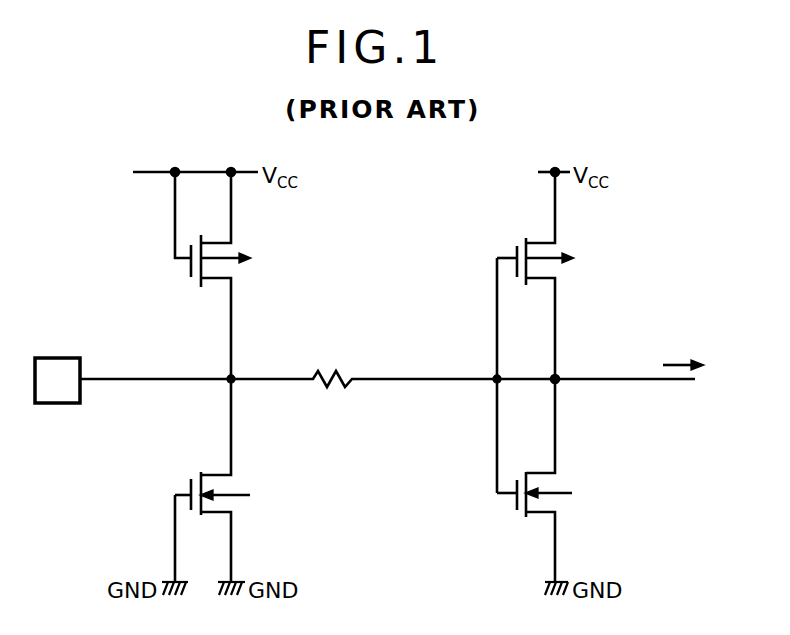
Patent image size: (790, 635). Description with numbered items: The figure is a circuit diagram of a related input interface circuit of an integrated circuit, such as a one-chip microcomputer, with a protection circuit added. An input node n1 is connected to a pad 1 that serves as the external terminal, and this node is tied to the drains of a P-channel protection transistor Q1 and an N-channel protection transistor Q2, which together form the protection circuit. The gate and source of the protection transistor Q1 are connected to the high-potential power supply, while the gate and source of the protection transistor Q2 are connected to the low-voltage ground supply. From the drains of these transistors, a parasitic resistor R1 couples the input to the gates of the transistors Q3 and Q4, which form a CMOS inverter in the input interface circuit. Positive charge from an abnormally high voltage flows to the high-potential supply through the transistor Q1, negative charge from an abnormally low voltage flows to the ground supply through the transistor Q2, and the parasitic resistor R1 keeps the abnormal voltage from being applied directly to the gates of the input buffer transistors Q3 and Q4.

The pad 1 is at (50, 355).
The P-channel protection transistor Q1 is at (238, 250).
The N-channel protection transistor Q2 is at (227, 502).
The input buffer transistor Q3 is at (555, 250).
The input buffer transistor Q4 is at (552, 502).
The parasitic resistor R1 is at (366, 367).
The input node n1 is at (167, 377).